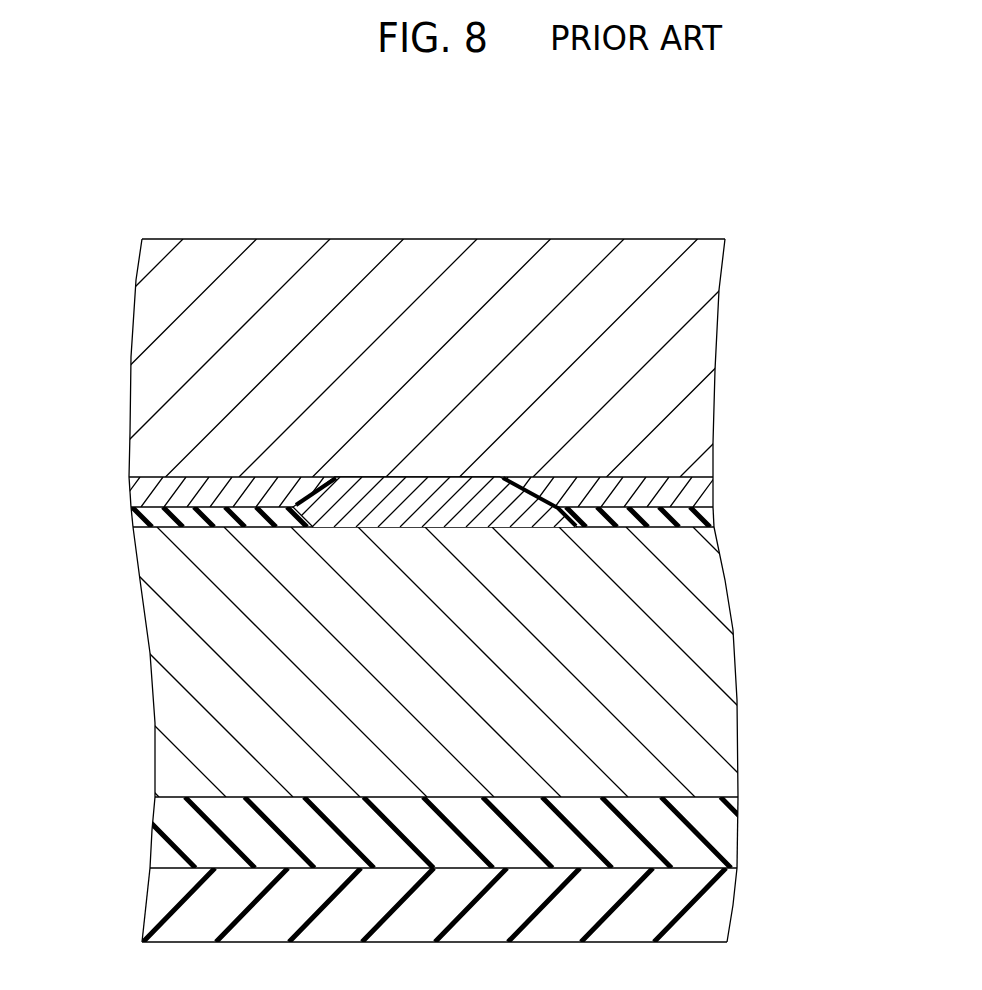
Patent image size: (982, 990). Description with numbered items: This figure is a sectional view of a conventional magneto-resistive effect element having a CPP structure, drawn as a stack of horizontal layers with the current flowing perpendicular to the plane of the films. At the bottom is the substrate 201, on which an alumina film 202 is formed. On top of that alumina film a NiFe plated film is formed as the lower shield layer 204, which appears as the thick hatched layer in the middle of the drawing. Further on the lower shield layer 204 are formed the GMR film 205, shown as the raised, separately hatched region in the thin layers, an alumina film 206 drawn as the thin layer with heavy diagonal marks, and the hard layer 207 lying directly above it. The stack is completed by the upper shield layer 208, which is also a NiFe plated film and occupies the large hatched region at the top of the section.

The substrate 201 is at (712, 905).
The alumina film 202 is at (715, 838).
The lower shield layer 204 is at (708, 655).
The GMR film 205 is at (447, 497).
The alumina film 206 is at (707, 516).
The hard layer 207 is at (700, 493).
The upper shield layer 208 is at (686, 366).